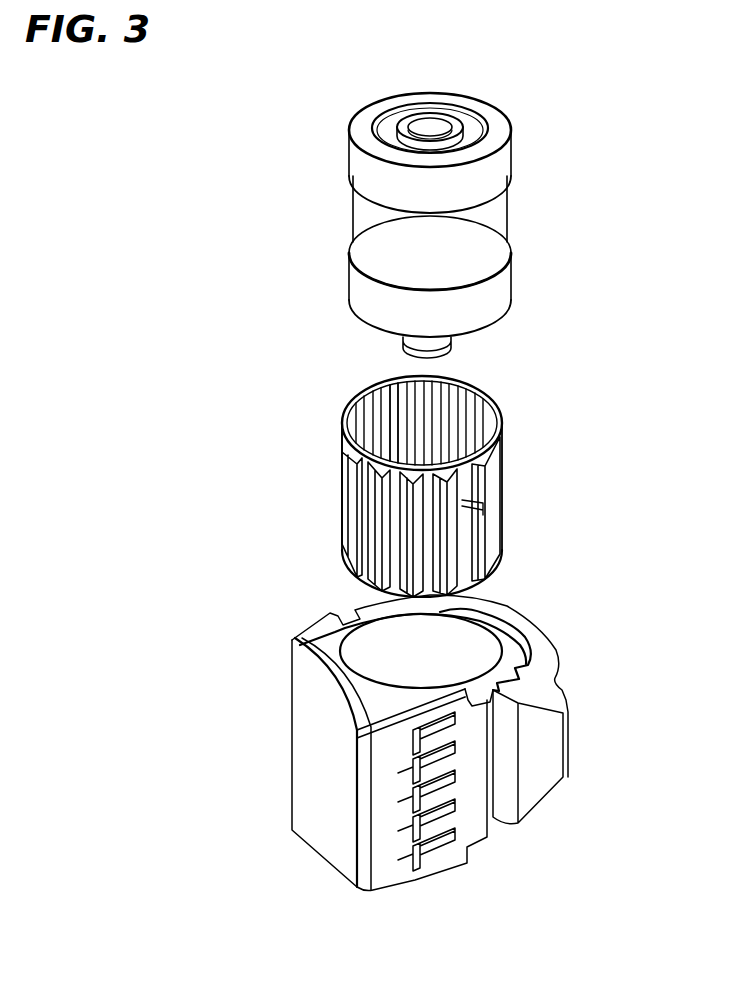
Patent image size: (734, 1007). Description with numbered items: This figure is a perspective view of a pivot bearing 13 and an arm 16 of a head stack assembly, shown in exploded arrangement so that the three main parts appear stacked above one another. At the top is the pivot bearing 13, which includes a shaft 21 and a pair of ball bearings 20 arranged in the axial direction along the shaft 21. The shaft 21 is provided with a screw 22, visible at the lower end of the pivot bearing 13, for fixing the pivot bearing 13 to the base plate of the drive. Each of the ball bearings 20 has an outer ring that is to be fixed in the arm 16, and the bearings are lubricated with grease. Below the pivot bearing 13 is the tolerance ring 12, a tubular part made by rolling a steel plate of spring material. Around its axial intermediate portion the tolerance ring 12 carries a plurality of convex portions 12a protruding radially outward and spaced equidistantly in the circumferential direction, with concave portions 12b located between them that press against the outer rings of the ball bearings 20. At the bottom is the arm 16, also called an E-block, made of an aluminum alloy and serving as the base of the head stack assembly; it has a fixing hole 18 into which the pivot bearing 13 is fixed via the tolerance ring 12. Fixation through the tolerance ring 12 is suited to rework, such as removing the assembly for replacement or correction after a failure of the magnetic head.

The tolerance ring 12 is at (435, 486).
The convex portions 12a is at (450, 543).
The concave portions 12b is at (400, 413).
The pivot bearing 13 is at (459, 221).
The arm 16 is at (462, 743).
The fixing hole 18 is at (460, 648).
The ball bearings 20 is at (501, 165).
The shaft 21 is at (403, 124).
The screw 22 is at (406, 353).